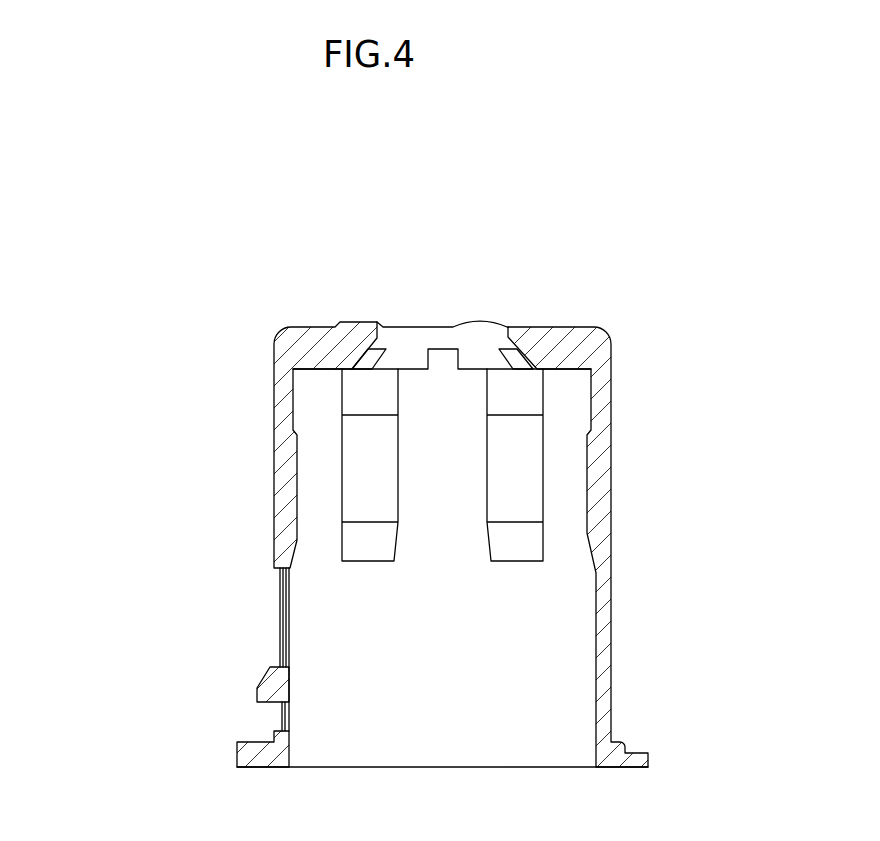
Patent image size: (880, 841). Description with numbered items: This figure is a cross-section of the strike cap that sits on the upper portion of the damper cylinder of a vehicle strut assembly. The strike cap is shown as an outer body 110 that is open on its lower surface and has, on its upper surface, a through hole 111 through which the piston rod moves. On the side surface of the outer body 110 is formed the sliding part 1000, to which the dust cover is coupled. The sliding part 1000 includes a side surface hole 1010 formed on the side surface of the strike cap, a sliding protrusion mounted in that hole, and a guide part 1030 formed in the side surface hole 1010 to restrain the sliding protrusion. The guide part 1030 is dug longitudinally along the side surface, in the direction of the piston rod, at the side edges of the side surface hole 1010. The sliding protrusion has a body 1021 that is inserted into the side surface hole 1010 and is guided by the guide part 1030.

The outer body 110 is at (597, 343).
The through hole 111 is at (436, 334).
The sliding part 1000 is at (232, 667).
The side surface hole 1010 is at (285, 620).
The body 1021 is at (264, 689).
The guide part 1030 is at (287, 716).